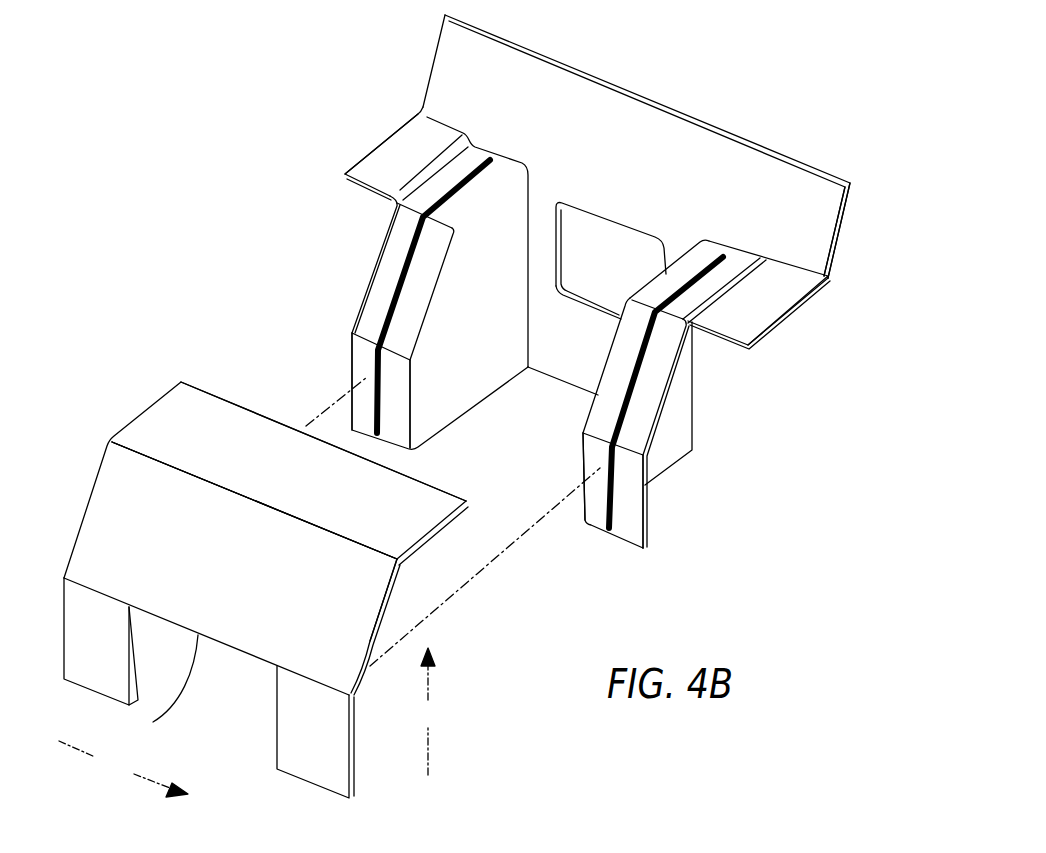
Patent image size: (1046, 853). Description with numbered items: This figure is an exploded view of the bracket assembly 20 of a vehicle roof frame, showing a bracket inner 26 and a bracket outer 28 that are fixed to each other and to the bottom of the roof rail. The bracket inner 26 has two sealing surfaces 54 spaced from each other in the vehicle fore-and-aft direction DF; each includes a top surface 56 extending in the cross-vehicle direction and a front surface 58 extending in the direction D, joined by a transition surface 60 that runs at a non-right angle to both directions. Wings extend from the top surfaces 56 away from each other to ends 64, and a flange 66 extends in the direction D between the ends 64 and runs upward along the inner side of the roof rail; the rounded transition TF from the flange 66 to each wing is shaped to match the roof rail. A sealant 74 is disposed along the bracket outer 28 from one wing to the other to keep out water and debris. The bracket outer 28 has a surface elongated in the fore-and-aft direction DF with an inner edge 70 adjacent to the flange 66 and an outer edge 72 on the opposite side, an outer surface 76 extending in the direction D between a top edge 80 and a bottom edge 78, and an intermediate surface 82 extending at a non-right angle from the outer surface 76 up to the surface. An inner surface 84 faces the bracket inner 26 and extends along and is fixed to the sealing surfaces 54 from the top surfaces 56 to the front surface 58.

The bracket assembly 20 is at (209, 121).
The bracket inner 26 is at (692, 113).
The bracket outer 28 is at (90, 466).
The sealing surfaces 54 is at (370, 282).
The top surface 56 is at (490, 183).
The front surface 58 is at (414, 422).
The transition surface 60 is at (437, 305).
The ends 64 is at (363, 158).
The flange 66 is at (842, 226).
The inner edge 70 is at (210, 393).
The outer edge 72 is at (148, 460).
The sealant 74 is at (423, 238).
The outer surface 76 is at (117, 658).
The bottom edge 78 is at (293, 777).
The top edge 80 is at (153, 722).
The intermediate surface 82 is at (236, 598).
The inner surface 84 is at (387, 593).
The transition TF is at (803, 275).
The direction D is at (430, 711).
The vehicle fore-and-aft direction DF is at (123, 769).